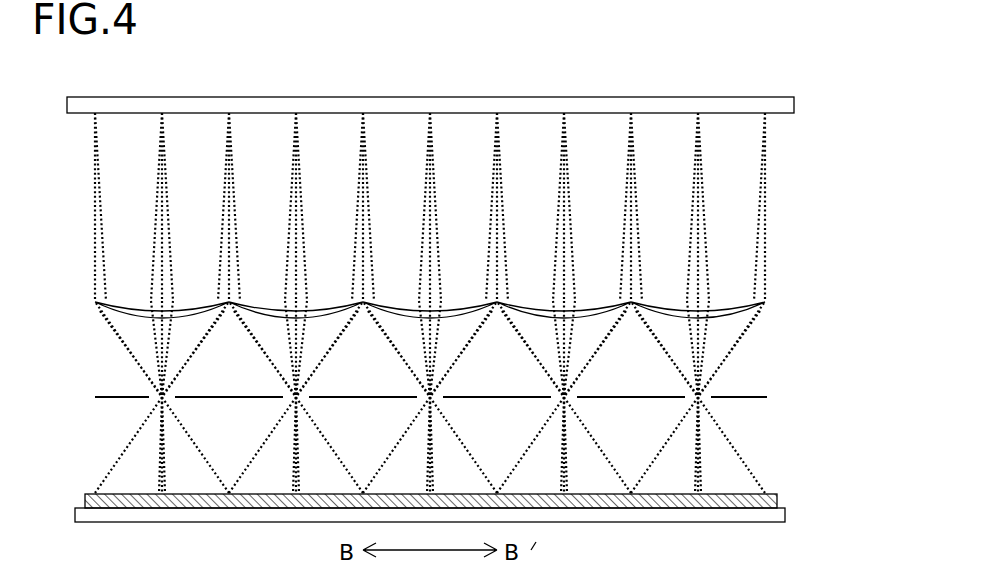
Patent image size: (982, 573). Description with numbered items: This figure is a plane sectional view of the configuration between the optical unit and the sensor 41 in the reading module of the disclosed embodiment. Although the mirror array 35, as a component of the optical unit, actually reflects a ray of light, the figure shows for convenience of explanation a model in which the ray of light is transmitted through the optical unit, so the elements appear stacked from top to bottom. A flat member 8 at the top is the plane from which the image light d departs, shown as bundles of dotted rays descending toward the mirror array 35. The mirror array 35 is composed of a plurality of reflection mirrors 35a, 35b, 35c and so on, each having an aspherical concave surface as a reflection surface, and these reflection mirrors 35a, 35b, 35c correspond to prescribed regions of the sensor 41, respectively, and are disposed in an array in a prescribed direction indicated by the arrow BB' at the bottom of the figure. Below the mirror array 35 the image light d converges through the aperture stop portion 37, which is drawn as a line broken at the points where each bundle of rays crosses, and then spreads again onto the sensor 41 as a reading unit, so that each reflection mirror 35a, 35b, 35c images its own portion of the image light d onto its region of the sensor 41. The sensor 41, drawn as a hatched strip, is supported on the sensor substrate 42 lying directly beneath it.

The light source / image display plane 8 is at (750, 97).
The image light d is at (768, 208).
The mirror array 35 is at (467, 337).
The reflection mirror 35a is at (730, 313).
The reflection mirror 35b is at (592, 313).
The reflection mirror 35c is at (457, 313).
The aperture stop portion 37 is at (110, 397).
The sensor 41 is at (92, 494).
The sensor substrate 42 is at (782, 508).